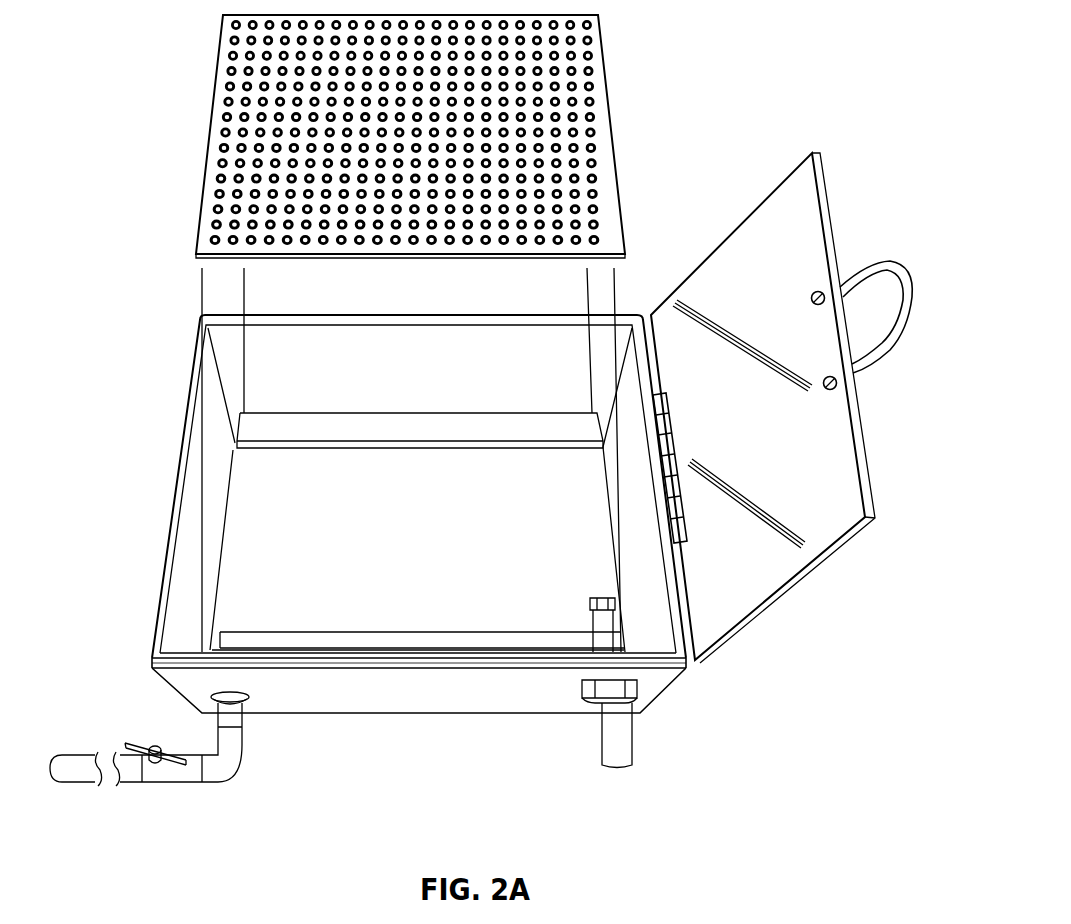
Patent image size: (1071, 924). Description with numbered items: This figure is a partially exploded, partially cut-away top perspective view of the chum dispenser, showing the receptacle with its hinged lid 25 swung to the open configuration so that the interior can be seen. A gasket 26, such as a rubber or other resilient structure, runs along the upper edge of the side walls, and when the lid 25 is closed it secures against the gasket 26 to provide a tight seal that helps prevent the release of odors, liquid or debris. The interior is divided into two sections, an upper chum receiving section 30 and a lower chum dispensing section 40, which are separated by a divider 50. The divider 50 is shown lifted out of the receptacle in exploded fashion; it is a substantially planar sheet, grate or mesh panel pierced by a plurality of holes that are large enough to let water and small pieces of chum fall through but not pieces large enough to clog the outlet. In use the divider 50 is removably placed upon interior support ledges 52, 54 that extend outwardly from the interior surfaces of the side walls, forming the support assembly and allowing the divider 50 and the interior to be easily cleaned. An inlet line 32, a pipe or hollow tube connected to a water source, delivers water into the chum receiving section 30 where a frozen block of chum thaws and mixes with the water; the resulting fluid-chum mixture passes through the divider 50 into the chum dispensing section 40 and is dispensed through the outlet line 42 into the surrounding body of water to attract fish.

The lid 25 is at (782, 573).
The gasket 26 is at (428, 657).
The chum receiving section 30 is at (238, 412).
The inlet line 32 is at (620, 743).
The chum dispensing section 40 is at (433, 557).
The outlet line 42 is at (228, 762).
The divider 50 is at (580, 80).
The interior support ledge 52 is at (490, 427).
The interior support ledge 54 is at (265, 643).